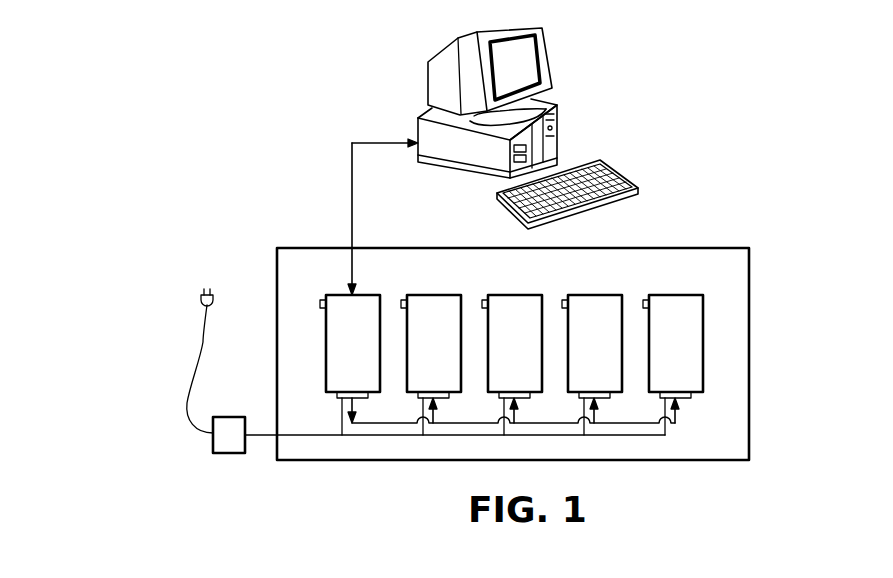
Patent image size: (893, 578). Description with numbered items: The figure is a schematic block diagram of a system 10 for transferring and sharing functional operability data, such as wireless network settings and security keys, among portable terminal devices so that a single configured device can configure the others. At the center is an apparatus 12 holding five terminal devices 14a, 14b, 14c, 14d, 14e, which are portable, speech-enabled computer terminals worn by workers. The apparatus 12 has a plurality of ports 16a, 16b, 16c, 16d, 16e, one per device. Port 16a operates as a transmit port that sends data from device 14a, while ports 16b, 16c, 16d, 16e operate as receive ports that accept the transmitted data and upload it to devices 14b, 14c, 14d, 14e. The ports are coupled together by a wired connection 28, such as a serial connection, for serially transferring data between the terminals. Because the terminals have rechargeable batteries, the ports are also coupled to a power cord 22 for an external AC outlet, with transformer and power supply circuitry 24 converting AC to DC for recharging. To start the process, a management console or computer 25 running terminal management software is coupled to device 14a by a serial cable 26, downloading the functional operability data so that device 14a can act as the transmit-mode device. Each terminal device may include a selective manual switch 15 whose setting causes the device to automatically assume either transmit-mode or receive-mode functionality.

The system 10 is at (715, 116).
The apparatus 12 is at (737, 248).
The terminal device 14a is at (364, 295).
The terminal device 14b is at (444, 295).
The terminal device 14c is at (523, 295).
The terminal device 14d is at (603, 295).
The terminal device 14e is at (682, 295).
The selective manual switch 15 is at (400, 302).
The transmit port 16a is at (337, 396).
The receive port 16b is at (418, 397).
The receive port 16c is at (499, 397).
The receive port 16d is at (579, 397).
The receive port 16e is at (660, 397).
The power cord 22 is at (203, 342).
The transformer and power supply circuitry 24 is at (225, 453).
The management console or computer 25 is at (533, 27).
The serial cable 26 is at (352, 143).
The bus 28 is at (665, 435).